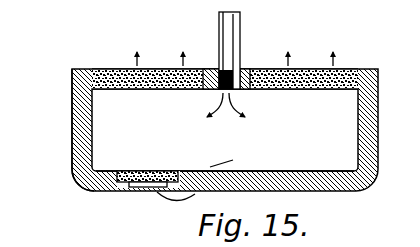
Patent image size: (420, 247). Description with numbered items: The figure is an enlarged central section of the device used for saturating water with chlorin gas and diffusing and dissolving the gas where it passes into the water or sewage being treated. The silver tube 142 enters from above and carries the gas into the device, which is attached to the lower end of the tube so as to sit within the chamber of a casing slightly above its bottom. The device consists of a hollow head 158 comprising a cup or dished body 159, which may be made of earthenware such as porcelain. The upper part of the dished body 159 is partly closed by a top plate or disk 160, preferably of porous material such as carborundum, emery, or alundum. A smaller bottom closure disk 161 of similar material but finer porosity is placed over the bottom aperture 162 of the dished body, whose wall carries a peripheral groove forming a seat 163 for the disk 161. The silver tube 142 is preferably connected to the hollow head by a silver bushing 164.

The silver tube 142 is at (233, 27).
The hollow head 158 is at (199, 130).
The cup or dished body 159 is at (72, 156).
The top plate or disk 160 is at (180, 41).
The bottom closure disk 161 is at (147, 185).
The bottom aperture 162 is at (225, 172).
The seat 163 is at (118, 186).
The silver bushing 164 is at (245, 70).